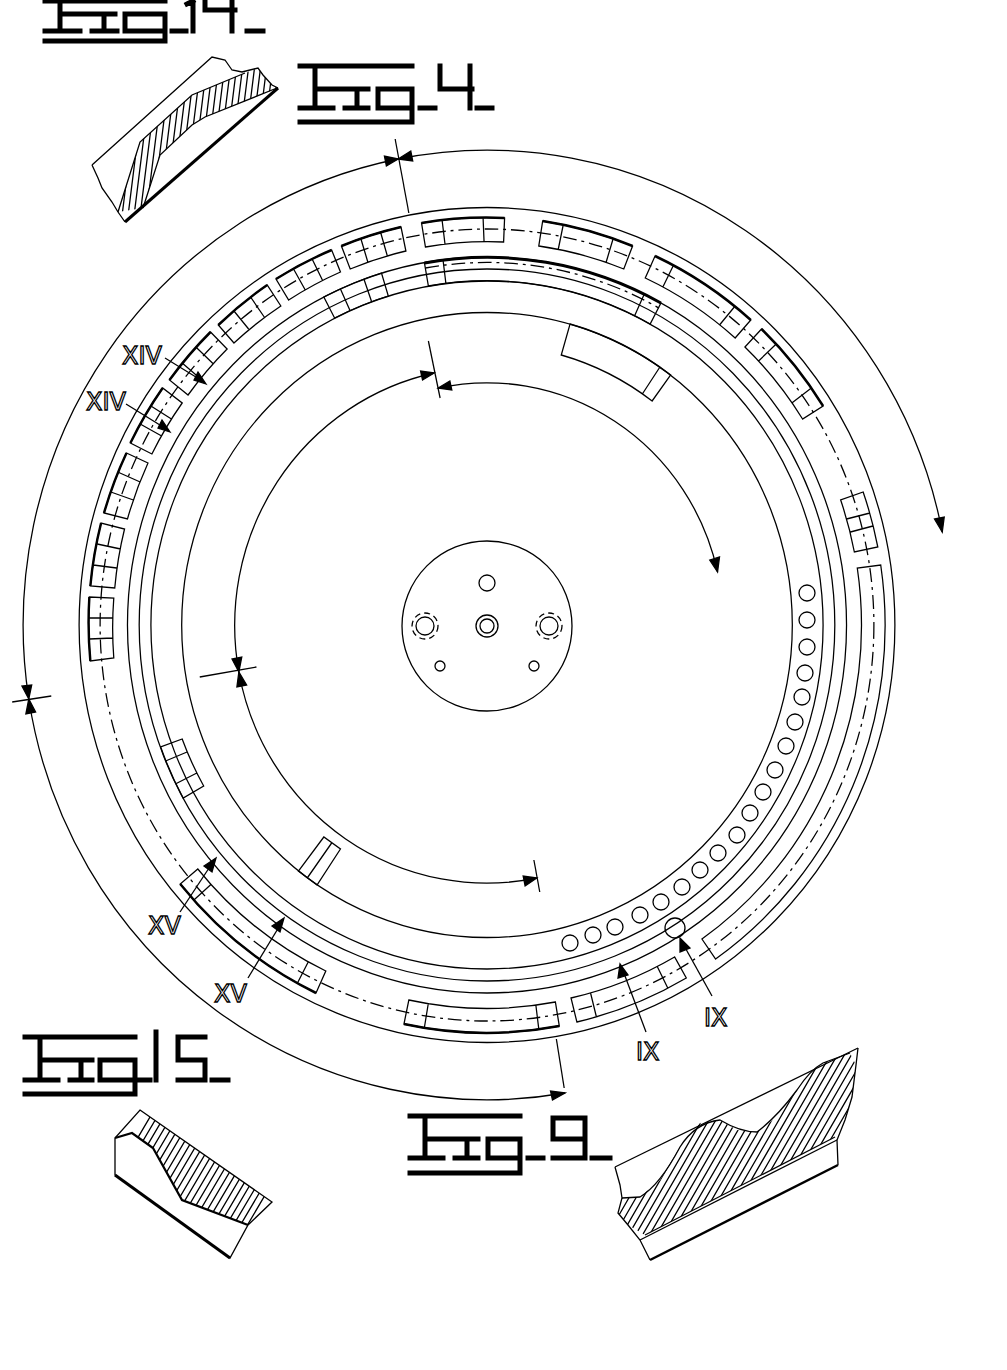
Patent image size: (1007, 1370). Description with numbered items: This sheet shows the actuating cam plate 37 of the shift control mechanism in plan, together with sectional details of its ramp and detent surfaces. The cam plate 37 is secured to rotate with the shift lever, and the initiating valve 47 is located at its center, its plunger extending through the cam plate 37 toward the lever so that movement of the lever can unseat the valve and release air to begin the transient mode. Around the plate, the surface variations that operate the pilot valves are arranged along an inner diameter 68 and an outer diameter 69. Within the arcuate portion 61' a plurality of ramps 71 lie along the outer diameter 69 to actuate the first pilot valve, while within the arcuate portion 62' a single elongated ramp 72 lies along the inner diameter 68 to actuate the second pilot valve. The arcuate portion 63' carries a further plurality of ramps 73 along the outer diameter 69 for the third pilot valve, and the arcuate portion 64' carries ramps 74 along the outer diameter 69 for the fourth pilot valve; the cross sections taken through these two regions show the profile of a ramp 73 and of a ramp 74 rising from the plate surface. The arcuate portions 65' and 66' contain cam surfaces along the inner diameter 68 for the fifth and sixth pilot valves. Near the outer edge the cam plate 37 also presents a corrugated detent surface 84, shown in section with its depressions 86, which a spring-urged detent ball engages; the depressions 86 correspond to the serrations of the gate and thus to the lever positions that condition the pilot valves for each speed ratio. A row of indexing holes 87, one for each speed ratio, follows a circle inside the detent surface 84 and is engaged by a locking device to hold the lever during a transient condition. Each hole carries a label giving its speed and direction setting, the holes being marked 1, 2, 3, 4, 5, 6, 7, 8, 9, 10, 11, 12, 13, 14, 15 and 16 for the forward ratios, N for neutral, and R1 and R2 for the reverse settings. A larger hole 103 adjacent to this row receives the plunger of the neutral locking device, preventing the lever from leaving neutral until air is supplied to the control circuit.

In FIG. 4, the speed ratio label 1 is at (648, 925).
In FIG. 4, the speed ratio label 2 is at (667, 913).
In FIG. 4, the speed ratio label 3 is at (692, 897).
In FIG. 4, the speed ratio label 4 is at (708, 880).
In FIG. 4, the speed ratio label 5 is at (730, 862).
In FIG. 4, the speed ratio label 6 is at (746, 844).
In FIG. 4, the speed ratio label 7 is at (764, 820).
In FIG. 4, the speed ratio label 8 is at (774, 800).
In FIG. 4, the speed ratio label 9 is at (790, 775).
In FIG. 4, the speed ratio label 10 is at (802, 750).
In FIG. 4, the speed ratio label 11 is at (812, 725).
In FIG. 4, the speed ratio label 12 is at (820, 698).
In FIG. 4, the speed ratio label 13 is at (823, 674).
In FIG. 4, the speed ratio label 14 is at (826, 646).
In FIG. 4, the speed ratio label 15 is at (826, 619).
In FIG. 4, the speed ratio label 16 is at (826, 589).
In FIG. 4, the neutral label N is at (619, 940).
In FIG. 4, the reverse setting label R1 is at (598, 948).
In FIG. 4, the reverse setting label R2 is at (569, 956).
In FIG. 4, the actuating cam plate 37 is at (634, 663).
In FIG. 4, the initiating valve 47 is at (495, 618).
In FIG. 4, the arcuate portion 61' is at (669, 335).
In FIG. 4, the arcuate portion 62' is at (573, 456).
In FIG. 4, the arcuate portion 63' is at (205, 429).
In FIG. 4, the arcuate portion 64' is at (295, 899).
In FIG. 4, the arcuate portion 65' is at (317, 524).
In FIG. 4, the arcuate portion 66' is at (388, 782).
In FIG. 4, the inner diameter 68 is at (798, 470).
In FIG. 4, the outer diameter 69 is at (836, 444).
In FIG. 4, the ramps 71 is at (472, 222).
In FIG. 4, the elongated ramp 72 is at (553, 289).
In FIG. 14, the ramps 73 is at (160, 174).
In FIG. 4, the ramps 73 is at (344, 258).
In FIG. 15, the ramps 74 is at (198, 1161).
In FIG. 4, the ramps 74 is at (246, 945).
In FIG. 9, the corrugated detent surface 84 is at (734, 1112).
In FIG. 4, the corrugated detent surface 84 is at (830, 820).
In FIG. 9, the depressions 86 is at (643, 1197).
In FIG. 4, the indexing holes 87 is at (793, 747).
In FIG. 4, the hole 103 is at (686, 932).